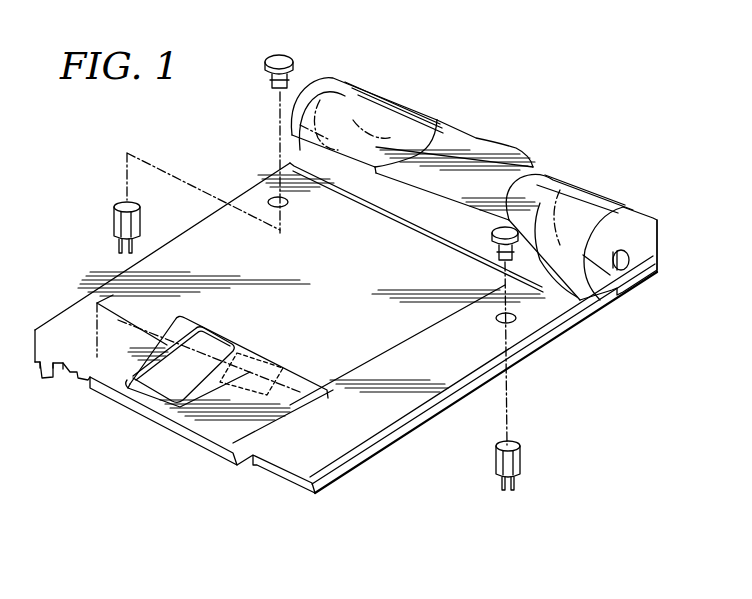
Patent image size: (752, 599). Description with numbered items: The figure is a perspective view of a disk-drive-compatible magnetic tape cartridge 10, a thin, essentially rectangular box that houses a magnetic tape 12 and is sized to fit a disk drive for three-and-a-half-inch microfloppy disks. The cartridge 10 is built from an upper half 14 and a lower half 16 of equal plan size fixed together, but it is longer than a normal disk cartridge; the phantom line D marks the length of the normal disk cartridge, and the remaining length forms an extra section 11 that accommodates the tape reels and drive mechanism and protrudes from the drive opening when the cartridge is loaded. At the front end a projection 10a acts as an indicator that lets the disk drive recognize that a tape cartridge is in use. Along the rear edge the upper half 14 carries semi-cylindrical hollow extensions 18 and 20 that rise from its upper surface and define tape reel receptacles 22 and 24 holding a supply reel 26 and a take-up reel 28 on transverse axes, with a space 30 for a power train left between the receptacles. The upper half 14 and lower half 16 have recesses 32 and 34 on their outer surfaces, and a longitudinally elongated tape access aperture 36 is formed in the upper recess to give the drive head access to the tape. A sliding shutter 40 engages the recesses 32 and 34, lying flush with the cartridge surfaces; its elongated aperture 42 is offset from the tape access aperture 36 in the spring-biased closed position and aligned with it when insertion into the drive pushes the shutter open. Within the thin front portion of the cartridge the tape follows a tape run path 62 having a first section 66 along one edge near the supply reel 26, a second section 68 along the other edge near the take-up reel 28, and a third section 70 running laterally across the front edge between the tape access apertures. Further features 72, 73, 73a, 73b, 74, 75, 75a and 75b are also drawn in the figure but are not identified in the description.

The magnetic tape cartridge 10 is at (500, 142).
The projection 10a is at (44, 378).
The extra section 11 is at (576, 186).
The magnetic tape 12 is at (464, 368).
The upper half 14 is at (438, 408).
The lower half 16 is at (403, 433).
The semi-cylindrical hollow extension 18 is at (626, 207).
The semi-cylindrical hollow extension 20 is at (343, 88).
The tape reel receptacle 22 is at (586, 312).
The tape reel receptacle 24 is at (388, 107).
The supply reel 26 is at (614, 187).
The take-up reel 28 is at (328, 90).
The space 30 is at (516, 183).
The recess 32 is at (253, 468).
The recess 34 is at (268, 484).
The tape access aperture 36 is at (290, 356).
The sliding shutter 40 is at (180, 327).
The aperture 42 is at (212, 345).
The tape run path 62 is at (173, 241).
The first section 66 is at (384, 378).
The second section 68 is at (227, 220).
The third section 70 is at (213, 452).
The fastener hole 72 is at (516, 322).
The fastener assembly 73 is at (523, 383).
The screw 73a is at (493, 230).
The nut 73b is at (523, 461).
The fastener hole 74 is at (277, 185).
The fastener assembly 75 is at (257, 62).
The screw 75a is at (277, 55).
The nut 75b is at (112, 220).
The phantom line D is at (412, 238).